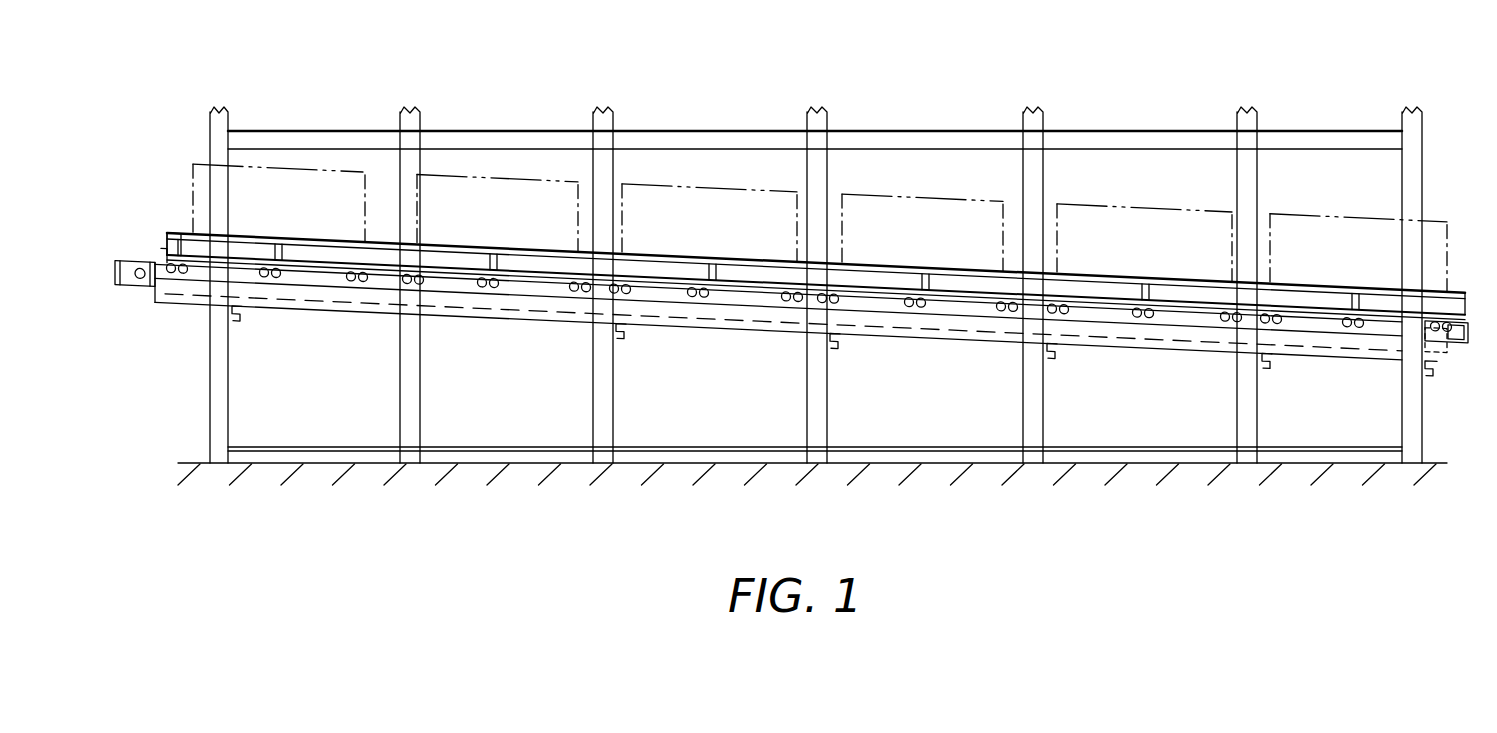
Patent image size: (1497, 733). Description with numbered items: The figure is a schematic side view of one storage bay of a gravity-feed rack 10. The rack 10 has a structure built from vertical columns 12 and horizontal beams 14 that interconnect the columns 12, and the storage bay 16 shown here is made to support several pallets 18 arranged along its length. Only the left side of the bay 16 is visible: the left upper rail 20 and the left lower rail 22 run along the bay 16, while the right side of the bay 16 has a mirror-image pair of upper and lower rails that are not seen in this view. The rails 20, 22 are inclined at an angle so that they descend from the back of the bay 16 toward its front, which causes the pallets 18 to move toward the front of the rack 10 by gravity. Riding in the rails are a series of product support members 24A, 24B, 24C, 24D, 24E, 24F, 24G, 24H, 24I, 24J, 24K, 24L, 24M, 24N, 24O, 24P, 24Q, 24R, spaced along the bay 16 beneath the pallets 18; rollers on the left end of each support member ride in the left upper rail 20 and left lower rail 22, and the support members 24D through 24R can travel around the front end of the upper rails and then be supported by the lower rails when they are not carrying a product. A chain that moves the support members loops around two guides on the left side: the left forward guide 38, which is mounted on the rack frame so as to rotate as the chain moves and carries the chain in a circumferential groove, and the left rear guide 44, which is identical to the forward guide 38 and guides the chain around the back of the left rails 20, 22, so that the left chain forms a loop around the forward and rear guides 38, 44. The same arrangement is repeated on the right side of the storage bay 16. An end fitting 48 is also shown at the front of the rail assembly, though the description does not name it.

The rack 10 is at (985, 67).
The vertical columns 12 is at (1045, 120).
The horizontal beams 14 is at (862, 130).
The storage bay 16 is at (1457, 162).
The pallets 18 is at (386, 245).
The left upper rail 20 is at (158, 264).
The left lower rail 22 is at (180, 300).
The product support member 24A is at (160, 265).
The product support member 24B is at (273, 270).
The product support member 24C is at (358, 283).
The product support member 24D is at (426, 304).
The product support member 24E is at (491, 287).
The product support member 24F is at (577, 292).
The product support member 24G is at (618, 290).
The product support member 24H is at (697, 297).
The product support member 24I is at (789, 298).
The product support member 24J is at (833, 302).
The product support member 24K is at (926, 305).
The product support member 24L is at (1006, 305).
The product support member 24M is at (1055, 312).
The product support member 24N is at (1142, 315).
The product support member 24O is at (1228, 320).
The product support member 24P is at (1270, 320).
The product support member 24Q is at (1354, 322).
The product support member 24R is at (1447, 325).
The left forward guide 38 is at (1440, 345).
The left rear guide 44 is at (140, 288).
The end bracket 48 is at (1467, 305).